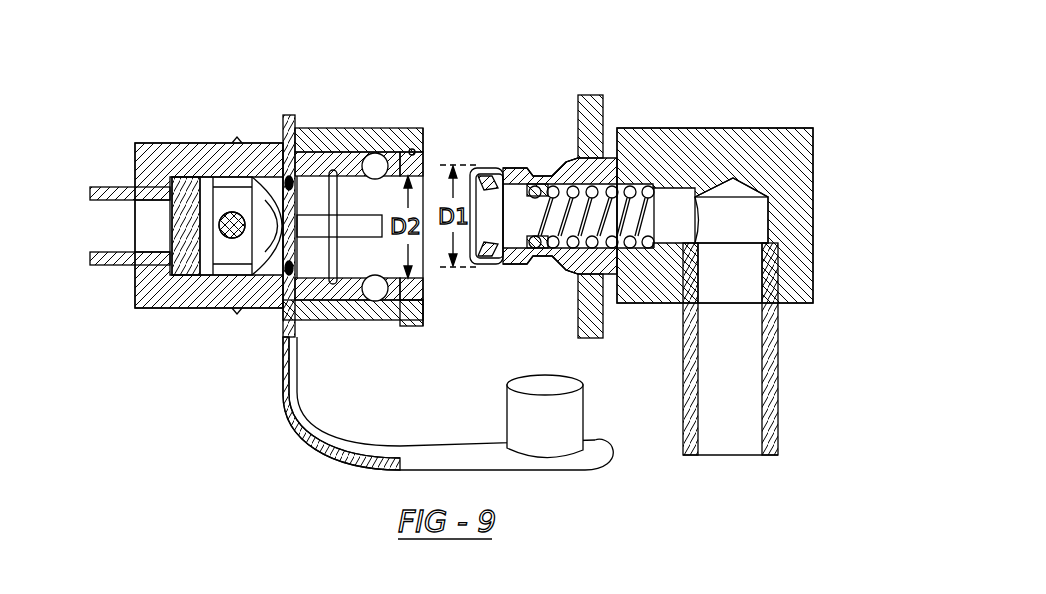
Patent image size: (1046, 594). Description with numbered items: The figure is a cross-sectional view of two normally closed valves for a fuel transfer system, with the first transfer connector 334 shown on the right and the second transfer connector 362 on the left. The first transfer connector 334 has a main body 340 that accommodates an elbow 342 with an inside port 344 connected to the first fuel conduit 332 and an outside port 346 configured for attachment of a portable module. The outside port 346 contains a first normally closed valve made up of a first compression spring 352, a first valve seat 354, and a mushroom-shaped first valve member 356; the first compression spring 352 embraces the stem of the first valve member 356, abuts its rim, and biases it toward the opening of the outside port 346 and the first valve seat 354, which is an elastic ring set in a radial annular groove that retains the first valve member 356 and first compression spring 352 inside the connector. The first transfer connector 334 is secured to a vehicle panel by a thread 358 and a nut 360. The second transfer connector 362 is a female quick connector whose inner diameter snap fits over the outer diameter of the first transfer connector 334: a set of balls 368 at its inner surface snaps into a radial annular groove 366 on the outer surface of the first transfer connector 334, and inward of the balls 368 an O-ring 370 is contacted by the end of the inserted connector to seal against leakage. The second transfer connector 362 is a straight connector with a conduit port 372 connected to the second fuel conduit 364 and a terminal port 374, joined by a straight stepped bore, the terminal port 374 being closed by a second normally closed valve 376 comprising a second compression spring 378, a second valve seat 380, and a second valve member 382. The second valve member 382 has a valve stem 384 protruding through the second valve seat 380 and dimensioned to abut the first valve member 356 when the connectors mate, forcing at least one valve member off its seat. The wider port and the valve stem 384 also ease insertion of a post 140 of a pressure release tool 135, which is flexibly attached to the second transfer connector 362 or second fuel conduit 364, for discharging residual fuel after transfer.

The pressure release tool 135 is at (367, 452).
The post 140 is at (555, 438).
The first fuel conduit 332 is at (763, 430).
The first transfer connector 334 is at (613, 121).
The main body 340 is at (718, 143).
The elbow 342 is at (743, 217).
The inside port 344 is at (832, 265).
The outside port 346 is at (521, 138).
The first compression spring 352 is at (583, 250).
The first valve seat 354 is at (497, 268).
The first valve member 356 is at (503, 193).
The thread 358 is at (568, 158).
The nut 360 is at (592, 95).
The second transfer connector 362 is at (208, 394).
The second fuel conduit 364 is at (120, 268).
The radial annular groove 366 is at (532, 267).
The balls 368 is at (386, 128).
The O-ring 370 is at (340, 310).
The conduit port 372 is at (158, 318).
The terminal port 374 is at (410, 327).
The second normally closed valve 376 is at (237, 137).
The second compression spring 378 is at (183, 176).
The second valve seat 380 is at (300, 115).
The second valve member 382 is at (280, 275).
The valve stem 384 is at (323, 230).